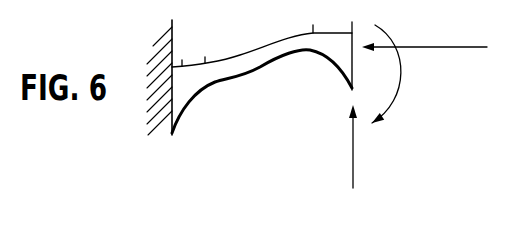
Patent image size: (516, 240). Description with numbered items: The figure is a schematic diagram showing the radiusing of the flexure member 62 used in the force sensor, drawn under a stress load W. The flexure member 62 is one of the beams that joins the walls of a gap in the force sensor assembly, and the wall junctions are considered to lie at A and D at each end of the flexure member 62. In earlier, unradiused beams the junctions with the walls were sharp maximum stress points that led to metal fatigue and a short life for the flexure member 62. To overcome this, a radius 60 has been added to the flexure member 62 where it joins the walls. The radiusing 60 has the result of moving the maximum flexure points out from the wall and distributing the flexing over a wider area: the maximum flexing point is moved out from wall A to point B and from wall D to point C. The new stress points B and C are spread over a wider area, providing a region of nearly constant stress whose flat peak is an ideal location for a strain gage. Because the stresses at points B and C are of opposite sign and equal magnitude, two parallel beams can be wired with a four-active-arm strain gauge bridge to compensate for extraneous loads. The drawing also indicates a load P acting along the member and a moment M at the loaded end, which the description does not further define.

The radius 60 is at (208, 90).
The flexure member 62 is at (238, 55).
The wall junction point A is at (182, 53).
The maximum flexing point B is at (205, 50).
The maximum flexing point C is at (312, 19).
The wall junction point D is at (352, 18).
The axial load P is at (424, 37).
The stress load W is at (353, 160).
The bending moment M is at (394, 74).